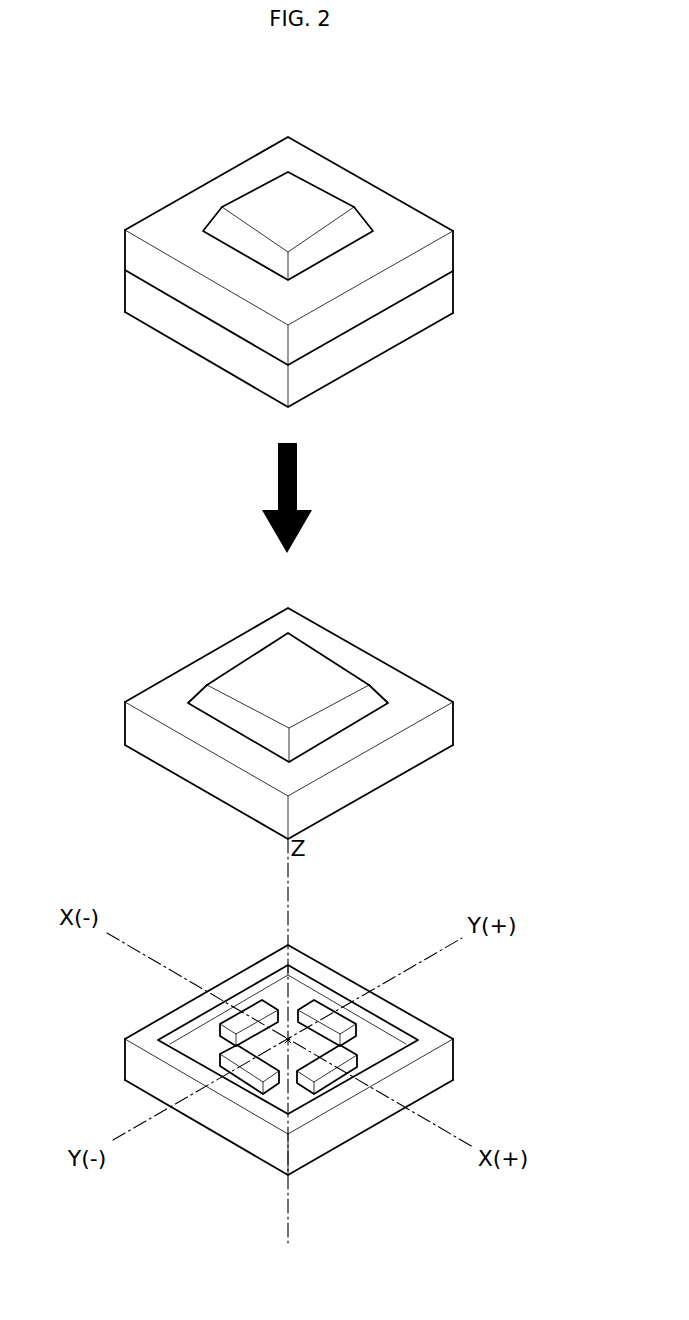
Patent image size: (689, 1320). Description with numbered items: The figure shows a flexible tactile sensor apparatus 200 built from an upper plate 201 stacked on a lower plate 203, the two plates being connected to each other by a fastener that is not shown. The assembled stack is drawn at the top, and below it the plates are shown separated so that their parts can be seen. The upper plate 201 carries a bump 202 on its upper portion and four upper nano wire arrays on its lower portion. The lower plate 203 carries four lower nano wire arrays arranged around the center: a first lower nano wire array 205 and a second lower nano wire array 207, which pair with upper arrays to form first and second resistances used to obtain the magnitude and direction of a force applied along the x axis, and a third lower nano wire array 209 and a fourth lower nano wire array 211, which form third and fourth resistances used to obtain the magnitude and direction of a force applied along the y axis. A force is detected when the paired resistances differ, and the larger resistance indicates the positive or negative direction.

The flexible tactile sensor apparatus 200 is at (403, 146).
The upper plate 201 is at (442, 257).
The bump 202 is at (323, 670).
The lower plate 203 is at (442, 305).
The first lower nano wire array 205 is at (257, 1010).
The second lower nano wire array 207 is at (319, 1069).
The third lower nano wire array 209 is at (262, 1070).
The fourth lower nano wire array 211 is at (320, 1010).